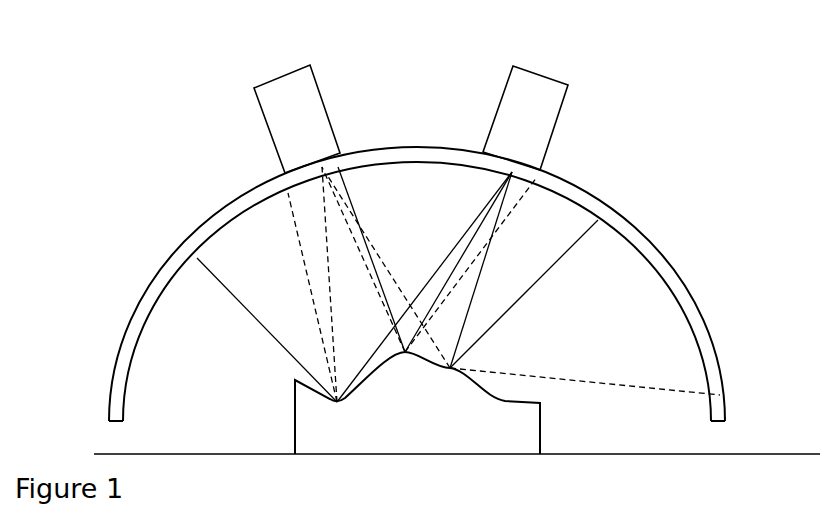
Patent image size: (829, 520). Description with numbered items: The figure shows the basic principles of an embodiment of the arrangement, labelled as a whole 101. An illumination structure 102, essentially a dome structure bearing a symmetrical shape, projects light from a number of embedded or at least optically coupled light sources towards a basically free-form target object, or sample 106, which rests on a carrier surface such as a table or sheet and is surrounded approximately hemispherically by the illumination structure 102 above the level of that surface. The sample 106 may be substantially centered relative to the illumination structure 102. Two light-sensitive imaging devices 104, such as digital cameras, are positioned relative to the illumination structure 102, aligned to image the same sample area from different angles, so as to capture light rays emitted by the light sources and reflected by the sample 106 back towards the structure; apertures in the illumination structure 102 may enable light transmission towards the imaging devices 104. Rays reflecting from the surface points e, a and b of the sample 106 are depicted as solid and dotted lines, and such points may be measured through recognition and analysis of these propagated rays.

The spectroscopic imaging system 101 is at (90, 38).
The illumination structure 102 is at (115, 368).
The imaging devices 104 is at (503, 88).
The sample 106 is at (503, 402).